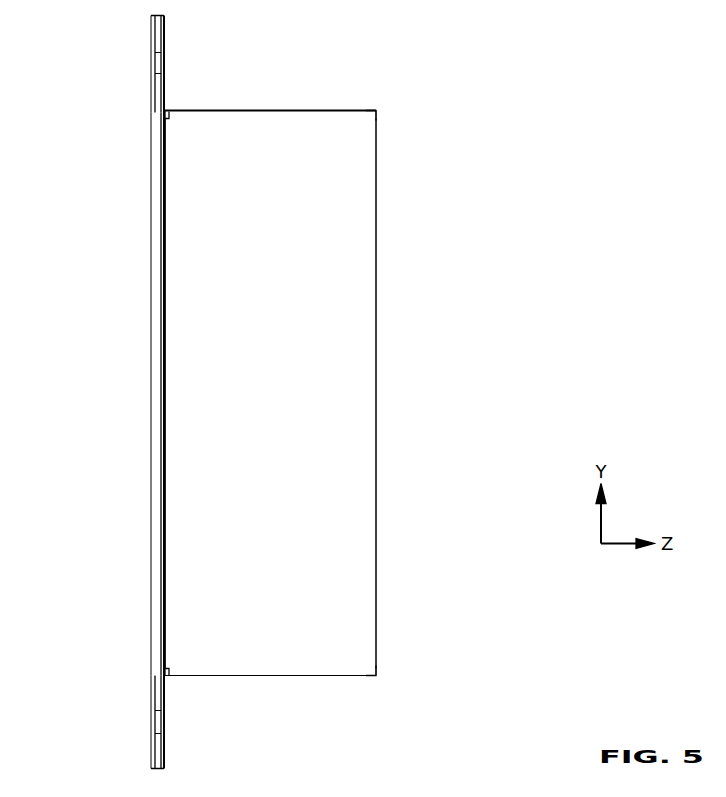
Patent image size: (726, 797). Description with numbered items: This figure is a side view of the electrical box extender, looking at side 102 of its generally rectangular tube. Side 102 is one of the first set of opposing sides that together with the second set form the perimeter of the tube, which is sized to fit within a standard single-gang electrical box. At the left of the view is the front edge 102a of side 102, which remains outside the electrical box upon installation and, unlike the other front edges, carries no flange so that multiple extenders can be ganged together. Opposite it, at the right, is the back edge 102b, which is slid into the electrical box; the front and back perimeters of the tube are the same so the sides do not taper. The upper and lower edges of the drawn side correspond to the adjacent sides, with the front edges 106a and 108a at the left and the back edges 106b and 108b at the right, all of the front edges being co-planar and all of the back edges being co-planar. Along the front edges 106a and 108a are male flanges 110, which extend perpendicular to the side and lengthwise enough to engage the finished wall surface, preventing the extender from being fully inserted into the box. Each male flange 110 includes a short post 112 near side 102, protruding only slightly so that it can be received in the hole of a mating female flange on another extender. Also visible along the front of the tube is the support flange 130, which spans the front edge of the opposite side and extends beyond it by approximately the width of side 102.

The side 102 is at (318, 258).
The front edge 102a is at (178, 391).
The back edge 102b is at (392, 168).
The front edge 106a is at (178, 96).
The back edge 106b is at (387, 99).
The front edge 108a is at (180, 687).
The back edge 108b is at (388, 685).
The male flange 110 is at (178, 43).
The short post 112 is at (150, 57).
The support flange 130 is at (157, 300).